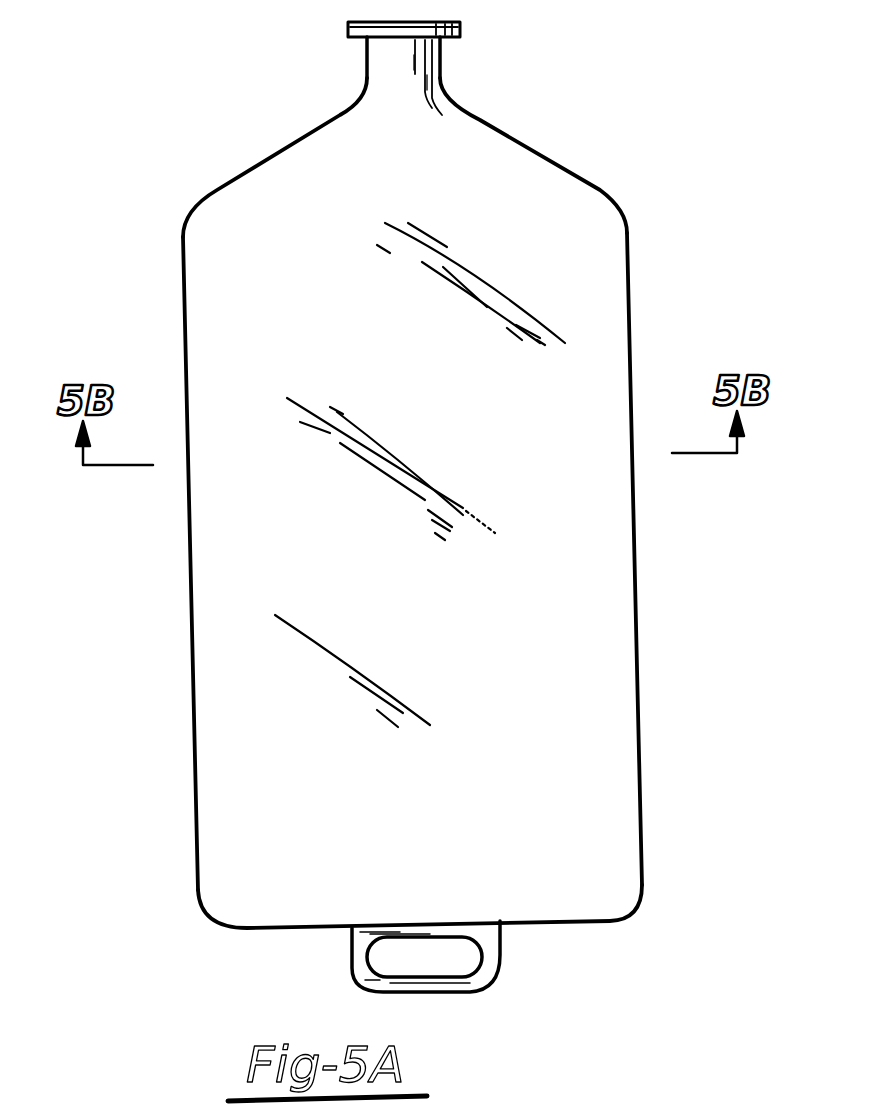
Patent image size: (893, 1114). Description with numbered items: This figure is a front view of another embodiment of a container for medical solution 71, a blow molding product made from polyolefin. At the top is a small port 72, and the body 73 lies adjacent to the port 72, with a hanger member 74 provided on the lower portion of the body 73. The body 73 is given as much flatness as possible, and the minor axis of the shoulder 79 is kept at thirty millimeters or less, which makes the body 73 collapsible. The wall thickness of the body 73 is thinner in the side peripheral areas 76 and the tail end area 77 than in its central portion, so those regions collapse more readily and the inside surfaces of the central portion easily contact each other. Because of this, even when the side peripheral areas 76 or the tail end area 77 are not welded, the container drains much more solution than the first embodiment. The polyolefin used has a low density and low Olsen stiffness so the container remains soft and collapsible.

The container for medical solution 71 is at (693, 200).
The small port 72 is at (443, 65).
The body 73 is at (570, 380).
The hanger member 74 is at (503, 958).
The side peripheral areas 76 is at (633, 605).
The tail end area 77 is at (575, 900).
The shoulder 79 is at (537, 147).